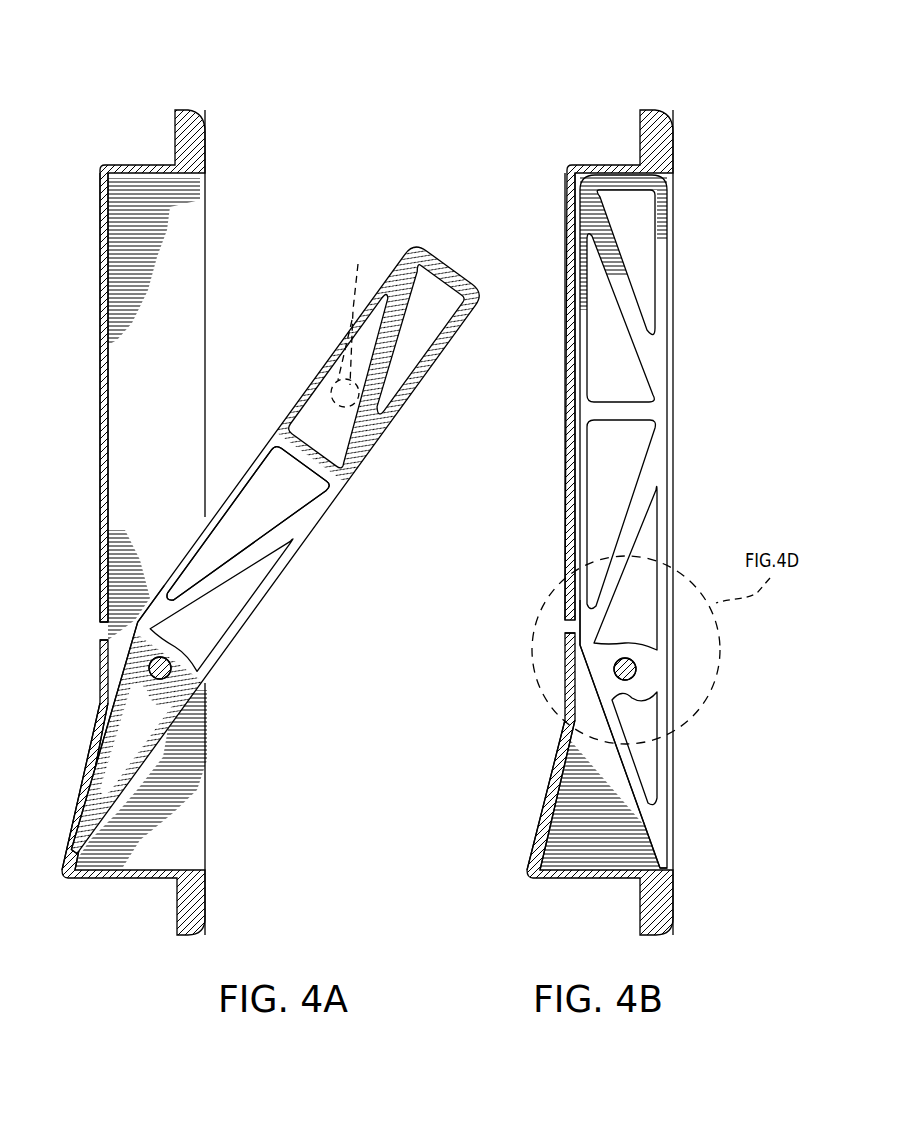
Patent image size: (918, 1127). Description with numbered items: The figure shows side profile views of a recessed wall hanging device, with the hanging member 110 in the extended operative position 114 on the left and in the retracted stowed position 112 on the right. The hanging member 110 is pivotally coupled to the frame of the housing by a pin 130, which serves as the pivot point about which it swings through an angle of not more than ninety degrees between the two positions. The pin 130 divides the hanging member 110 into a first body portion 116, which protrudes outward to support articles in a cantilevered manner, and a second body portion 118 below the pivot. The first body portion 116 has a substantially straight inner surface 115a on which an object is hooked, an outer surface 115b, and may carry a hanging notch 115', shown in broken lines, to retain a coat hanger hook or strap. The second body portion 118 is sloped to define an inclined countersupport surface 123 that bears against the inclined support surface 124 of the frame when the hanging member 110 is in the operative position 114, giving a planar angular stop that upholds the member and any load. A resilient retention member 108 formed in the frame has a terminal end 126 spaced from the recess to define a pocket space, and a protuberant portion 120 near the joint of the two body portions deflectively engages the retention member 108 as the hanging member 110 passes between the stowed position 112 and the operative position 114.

In FIG. 4A, the retention member 108 is at (102, 617).
In FIG. 4B, the retention member 108 is at (562, 592).
In FIG. 4A, the hanging member 110 is at (451, 253).
In FIG. 4B, the hanging member 110 is at (682, 200).
In FIG. 4B, the stowed position 112 is at (670, 80).
In FIG. 4A, the operative position 114 is at (150, 104).
In FIG. 4A, the hanging notch 115' is at (356, 322).
In FIG. 4A, the inner surface 115a is at (330, 373).
In FIG. 4A, the outer surface 115b is at (345, 495).
In FIG. 4A, the first body portion 116 is at (428, 378).
In FIG. 4A, the second body portion 118 is at (92, 755).
In FIG. 4B, the second body portion 118 is at (650, 830).
In FIG. 4A, the protuberant portion 120 is at (135, 603).
In FIG. 4B, the protuberant portion 120 is at (567, 630).
In FIG. 4A, the countersupport surface 123 is at (95, 855).
In FIG. 4B, the countersupport surface 123 is at (655, 848).
In FIG. 4A, the inclined support surface 124 is at (83, 783).
In FIG. 4B, the inclined support surface 124 is at (530, 838).
In FIG. 4A, the terminal end 126 is at (102, 633).
In FIG. 4A, the pin 130 is at (178, 668).
In FIG. 4B, the pin 130 is at (640, 668).